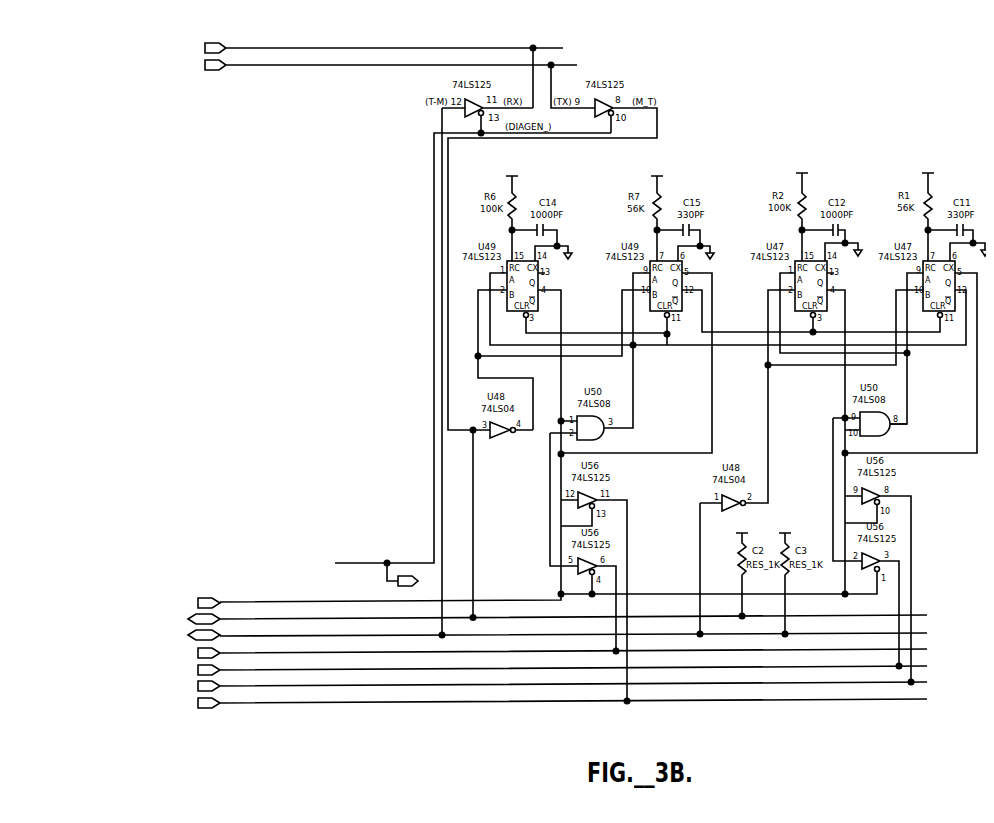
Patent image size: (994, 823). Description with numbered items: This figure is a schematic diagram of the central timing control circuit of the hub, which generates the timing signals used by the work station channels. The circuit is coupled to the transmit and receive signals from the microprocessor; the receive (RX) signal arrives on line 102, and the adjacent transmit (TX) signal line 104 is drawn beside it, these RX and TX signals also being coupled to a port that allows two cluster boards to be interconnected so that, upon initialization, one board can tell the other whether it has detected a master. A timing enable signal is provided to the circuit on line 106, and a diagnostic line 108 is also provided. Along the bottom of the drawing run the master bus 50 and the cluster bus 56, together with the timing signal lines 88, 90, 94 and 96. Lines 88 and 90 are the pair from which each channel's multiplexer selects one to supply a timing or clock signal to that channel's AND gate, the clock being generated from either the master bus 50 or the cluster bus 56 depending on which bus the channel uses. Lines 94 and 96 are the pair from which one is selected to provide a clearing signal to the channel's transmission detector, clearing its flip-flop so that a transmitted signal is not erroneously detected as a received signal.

The RX receive line 104 is at (336, 29).
The receive signal line 102 is at (323, 62).
The diagnostic line 108 is at (391, 560).
The timing enable line 106 is at (292, 598).
The master bus 50 is at (190, 614).
The cluster bus 56 is at (190, 631).
The timing signal line 88 is at (193, 650).
The timing signal line 90 is at (193, 667).
The timing signal line 96 is at (193, 683).
The timing signal line 94 is at (193, 700).